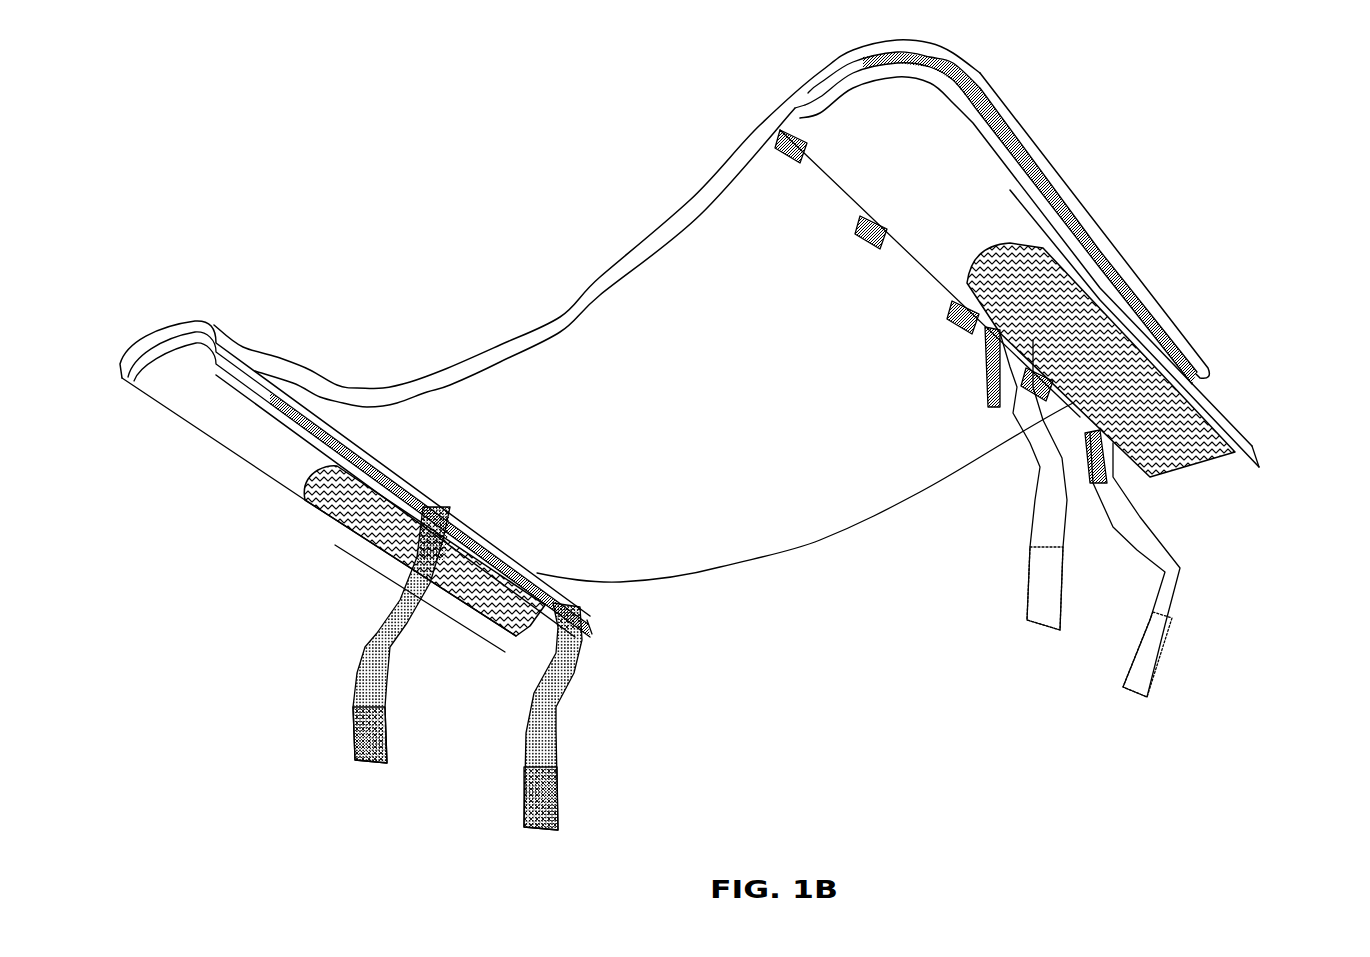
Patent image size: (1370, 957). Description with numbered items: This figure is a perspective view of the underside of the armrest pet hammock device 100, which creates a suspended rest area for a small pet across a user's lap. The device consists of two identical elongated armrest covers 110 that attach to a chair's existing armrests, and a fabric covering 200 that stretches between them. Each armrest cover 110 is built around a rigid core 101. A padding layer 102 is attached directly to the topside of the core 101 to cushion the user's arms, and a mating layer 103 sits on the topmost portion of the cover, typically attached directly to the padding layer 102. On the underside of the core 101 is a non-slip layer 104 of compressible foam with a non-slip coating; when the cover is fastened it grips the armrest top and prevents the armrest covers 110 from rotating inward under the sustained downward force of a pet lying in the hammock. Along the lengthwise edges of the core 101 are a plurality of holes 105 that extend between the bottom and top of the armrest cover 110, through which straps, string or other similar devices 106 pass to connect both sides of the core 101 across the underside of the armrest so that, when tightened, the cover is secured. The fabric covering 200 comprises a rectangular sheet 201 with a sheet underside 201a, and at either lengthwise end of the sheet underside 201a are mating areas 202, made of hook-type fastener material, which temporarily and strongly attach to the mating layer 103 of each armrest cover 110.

The armrest pet hammock device 100 is at (387, 116).
The armrest cover 110 is at (229, 486).
The core 101 is at (230, 418).
The padding layer 102 is at (157, 332).
The mating layer 103 is at (217, 348).
The non-slip layer 104 is at (320, 503).
The holes 105 is at (357, 540).
The straps, string or other similar devices 106 is at (363, 647).
The fabric covering 200 is at (800, 588).
The rectangular sheet 201 is at (542, 320).
The sheet underside 201a is at (688, 412).
The mating areas 202 is at (790, 162).